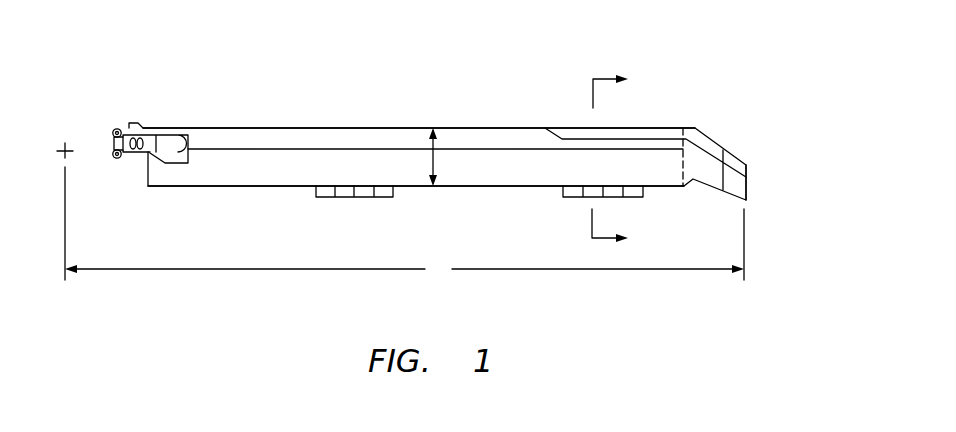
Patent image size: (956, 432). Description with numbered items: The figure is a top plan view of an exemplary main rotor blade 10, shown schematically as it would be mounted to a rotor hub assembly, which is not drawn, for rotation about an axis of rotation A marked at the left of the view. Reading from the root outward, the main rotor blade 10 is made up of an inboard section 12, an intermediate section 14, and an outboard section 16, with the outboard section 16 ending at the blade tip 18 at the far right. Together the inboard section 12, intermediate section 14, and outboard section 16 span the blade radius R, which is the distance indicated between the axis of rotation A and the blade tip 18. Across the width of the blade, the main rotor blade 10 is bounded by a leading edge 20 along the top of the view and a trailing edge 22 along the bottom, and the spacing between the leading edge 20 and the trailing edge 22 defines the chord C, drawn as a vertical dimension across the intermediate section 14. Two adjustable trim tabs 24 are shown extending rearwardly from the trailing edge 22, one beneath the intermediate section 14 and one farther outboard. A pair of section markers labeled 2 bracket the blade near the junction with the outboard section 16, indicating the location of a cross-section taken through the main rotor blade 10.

The main rotor blade 10 is at (252, 58).
The inboard section 12 is at (175, 102).
The intermediate section 14 is at (418, 100).
The outboard section 16 is at (683, 112).
The blade tip 18 is at (746, 190).
The leading edge 20 is at (493, 128).
The trailing edge 22 is at (468, 187).
The adjustable trim tabs 24 is at (398, 193).
The section line 2- 2 is at (619, 161).
The axis of rotation A is at (62, 148).
The chord C is at (433, 162).
The blade radius R is at (404, 224).